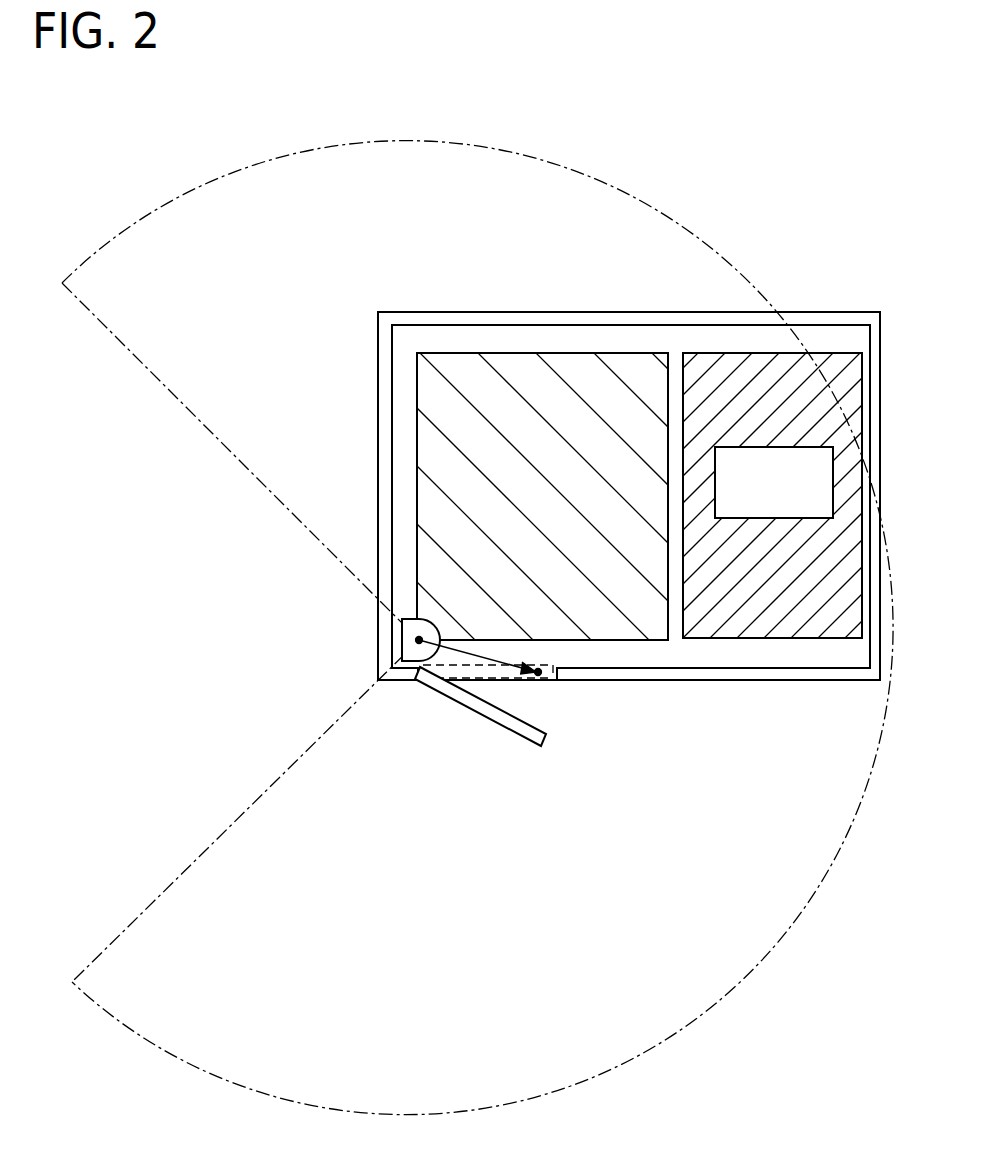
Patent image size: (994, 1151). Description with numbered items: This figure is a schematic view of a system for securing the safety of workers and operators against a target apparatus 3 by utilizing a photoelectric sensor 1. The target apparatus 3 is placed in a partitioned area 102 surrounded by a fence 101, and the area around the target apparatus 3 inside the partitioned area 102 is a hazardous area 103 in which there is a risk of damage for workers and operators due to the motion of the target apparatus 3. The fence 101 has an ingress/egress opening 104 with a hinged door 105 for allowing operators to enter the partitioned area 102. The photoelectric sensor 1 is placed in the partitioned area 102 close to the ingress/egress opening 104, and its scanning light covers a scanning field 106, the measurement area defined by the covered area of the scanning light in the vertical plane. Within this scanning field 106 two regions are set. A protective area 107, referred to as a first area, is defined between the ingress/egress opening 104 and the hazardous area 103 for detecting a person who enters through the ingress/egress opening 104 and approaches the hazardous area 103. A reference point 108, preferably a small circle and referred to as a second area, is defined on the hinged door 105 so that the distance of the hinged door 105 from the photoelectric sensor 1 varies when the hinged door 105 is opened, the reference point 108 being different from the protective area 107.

The photoelectric sensor 1 is at (419, 640).
The target apparatus 3 is at (803, 447).
The fence 101 is at (840, 311).
The partitioned area 102 is at (443, 340).
The hazardous area 103 is at (760, 353).
The ingress/egress opening 104 is at (494, 680).
The hinged door 105 is at (522, 738).
The scanning field 106 is at (712, 1012).
The protective area 107 is at (509, 353).
The reference point 108 is at (538, 672).